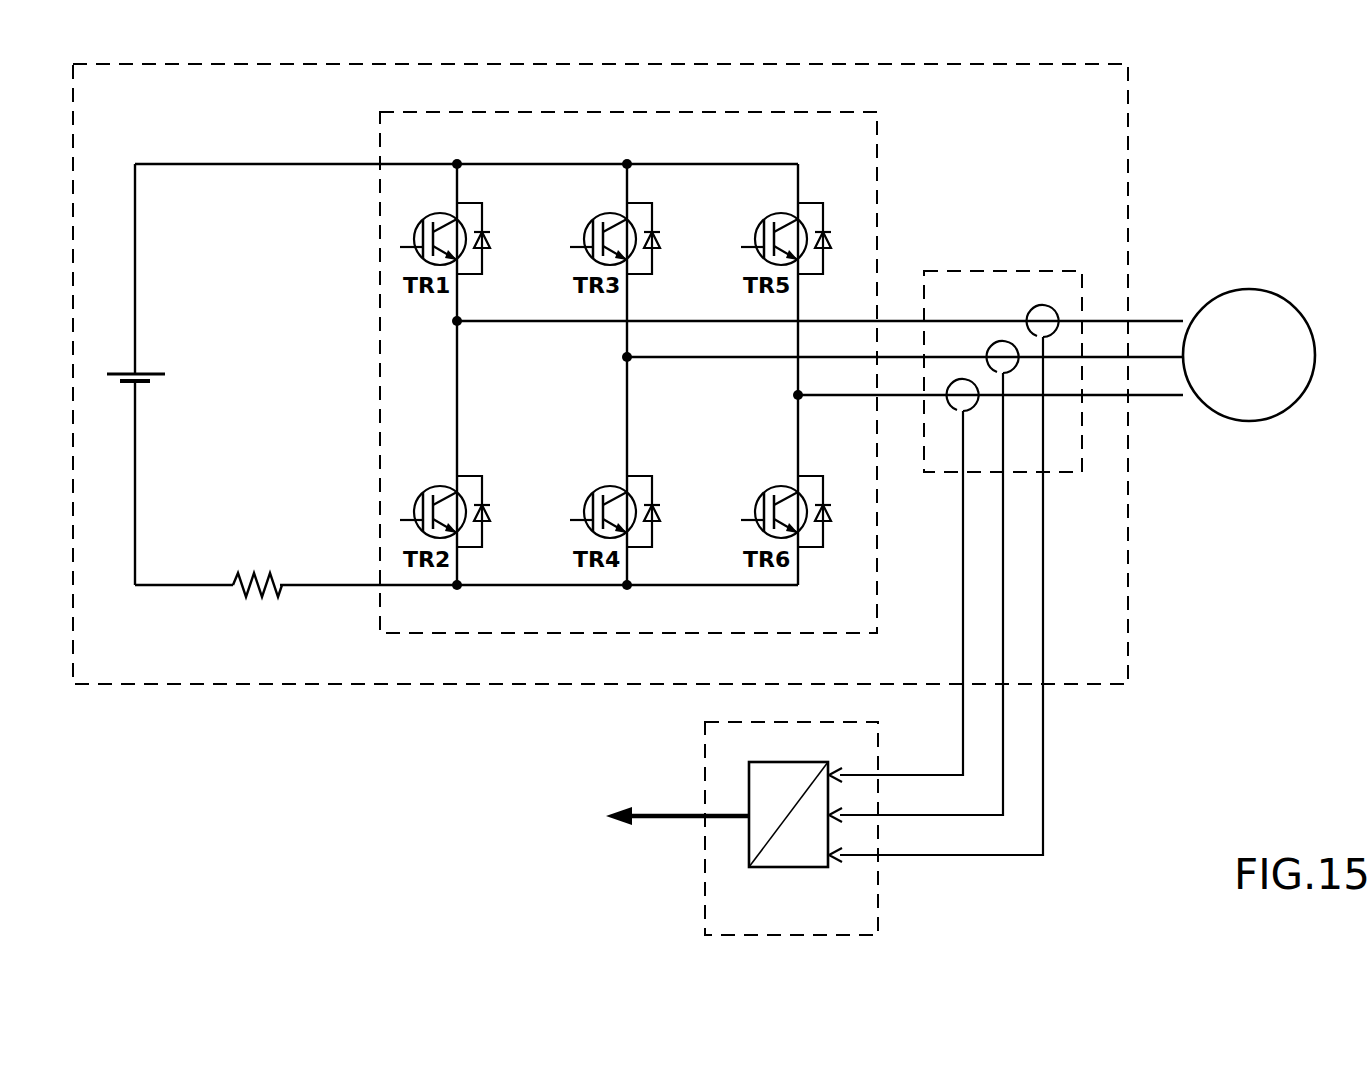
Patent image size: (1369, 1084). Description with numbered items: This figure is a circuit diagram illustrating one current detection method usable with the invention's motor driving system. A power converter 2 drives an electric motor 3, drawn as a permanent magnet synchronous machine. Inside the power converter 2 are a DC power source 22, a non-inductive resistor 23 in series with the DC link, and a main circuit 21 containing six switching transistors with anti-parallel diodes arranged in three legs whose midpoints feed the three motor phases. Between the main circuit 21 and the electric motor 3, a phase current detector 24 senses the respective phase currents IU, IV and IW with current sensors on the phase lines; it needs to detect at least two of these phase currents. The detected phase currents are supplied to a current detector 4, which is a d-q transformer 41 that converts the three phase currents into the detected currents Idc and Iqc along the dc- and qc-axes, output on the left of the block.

The power converter 2 is at (1128, 112).
The main circuit 21 is at (877, 140).
The DC power source 22 is at (143, 367).
The resistor 23 is at (260, 571).
The phase current detector 24 is at (979, 271).
The electric motor 3 is at (1235, 290).
The current detector 4 is at (878, 893).
The d-q transformer 41 is at (788, 868).